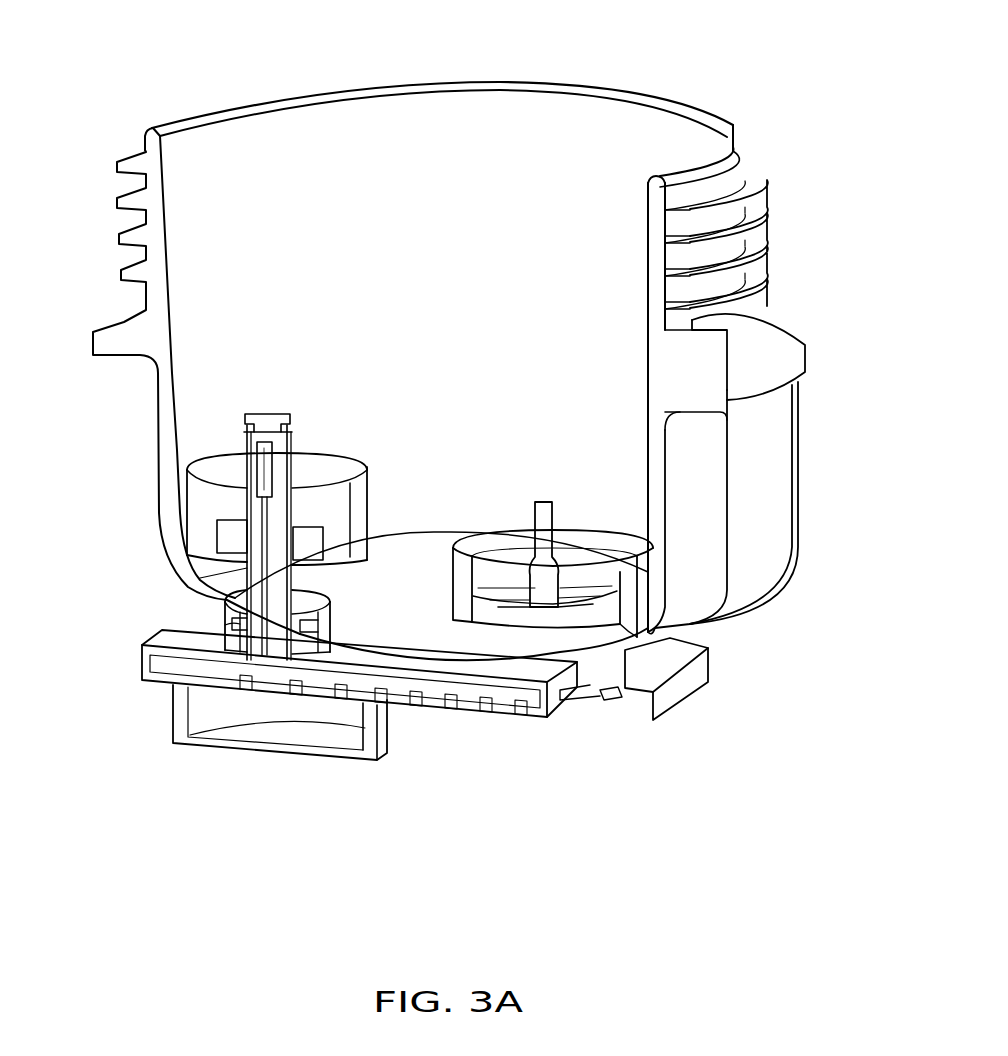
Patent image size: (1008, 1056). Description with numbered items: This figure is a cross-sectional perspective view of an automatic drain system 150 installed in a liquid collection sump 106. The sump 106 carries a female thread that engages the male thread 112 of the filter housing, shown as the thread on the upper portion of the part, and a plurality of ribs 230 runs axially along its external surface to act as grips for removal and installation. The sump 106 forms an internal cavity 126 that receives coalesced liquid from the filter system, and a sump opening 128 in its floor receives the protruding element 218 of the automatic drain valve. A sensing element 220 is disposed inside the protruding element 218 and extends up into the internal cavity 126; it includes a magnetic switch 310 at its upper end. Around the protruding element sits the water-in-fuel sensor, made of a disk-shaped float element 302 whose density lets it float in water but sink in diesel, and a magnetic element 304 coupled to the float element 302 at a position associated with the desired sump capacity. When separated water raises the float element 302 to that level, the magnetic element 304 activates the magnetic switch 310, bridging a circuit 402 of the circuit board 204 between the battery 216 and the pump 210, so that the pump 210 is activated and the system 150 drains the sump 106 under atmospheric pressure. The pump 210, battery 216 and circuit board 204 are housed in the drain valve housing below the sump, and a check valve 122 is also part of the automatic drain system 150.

The automatic drain system 150 is at (147, 107).
The internal cavity 126 is at (483, 173).
The male thread 112 is at (123, 206).
The liquid collection sump 106 is at (757, 297).
The ribs 230 is at (806, 470).
The magnetic switch 310 is at (270, 440).
The sensing element 220 is at (292, 478).
The float element 302 is at (393, 502).
The circuit 402 is at (263, 482).
The magnetic element 304 is at (307, 553).
The protruding element 218 is at (237, 625).
The sump opening 128 is at (232, 622).
The check valve 122 is at (630, 597).
The battery 216 is at (287, 757).
The circuit board 204 is at (512, 697).
The pump 210 is at (605, 701).